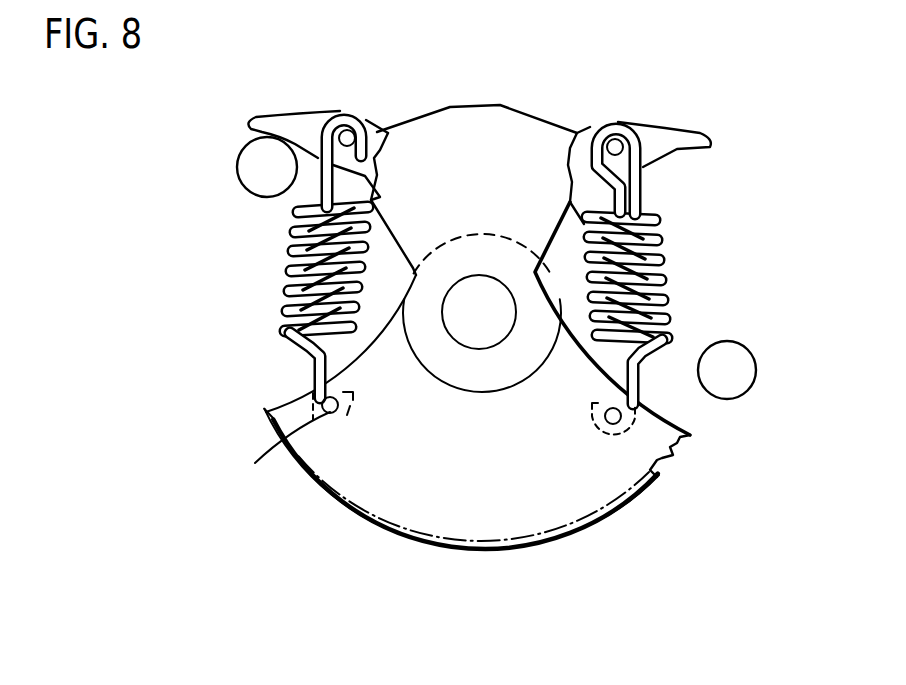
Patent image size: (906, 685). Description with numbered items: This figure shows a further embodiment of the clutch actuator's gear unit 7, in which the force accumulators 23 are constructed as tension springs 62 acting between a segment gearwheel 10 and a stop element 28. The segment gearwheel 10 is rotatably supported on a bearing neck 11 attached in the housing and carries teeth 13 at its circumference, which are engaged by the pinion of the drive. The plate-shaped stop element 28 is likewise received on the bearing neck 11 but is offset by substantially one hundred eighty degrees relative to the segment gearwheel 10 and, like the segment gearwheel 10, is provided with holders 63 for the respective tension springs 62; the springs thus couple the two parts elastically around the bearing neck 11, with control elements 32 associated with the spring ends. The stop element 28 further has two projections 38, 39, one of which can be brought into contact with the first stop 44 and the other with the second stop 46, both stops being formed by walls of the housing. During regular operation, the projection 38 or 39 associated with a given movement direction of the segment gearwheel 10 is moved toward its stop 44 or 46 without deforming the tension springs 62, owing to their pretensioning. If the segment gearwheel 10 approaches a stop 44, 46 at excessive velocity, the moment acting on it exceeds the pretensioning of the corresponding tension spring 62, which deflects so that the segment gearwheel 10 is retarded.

The gear unit 7 is at (441, 552).
The segment gearwheel 10 is at (387, 497).
The bearing neck 11 is at (465, 333).
The teeth 13 is at (670, 463).
The force accumulator 23 is at (488, 262).
The stop element 28 is at (455, 130).
The control element 32 is at (323, 418).
The projection 38 is at (300, 128).
The projection 39 is at (662, 137).
The first stop 44 is at (255, 150).
The second stop 46 is at (749, 367).
The tension spring 62 is at (290, 310).
The holder 63 is at (352, 131).